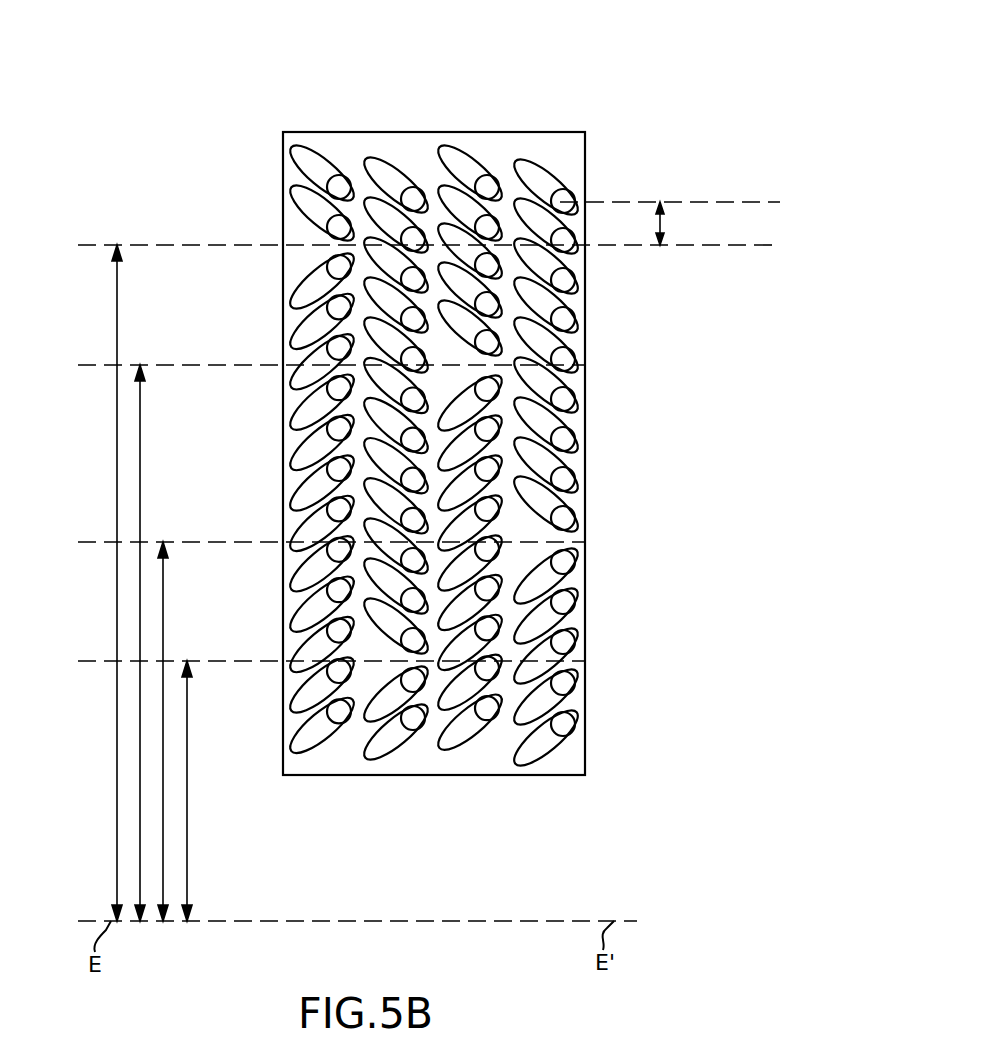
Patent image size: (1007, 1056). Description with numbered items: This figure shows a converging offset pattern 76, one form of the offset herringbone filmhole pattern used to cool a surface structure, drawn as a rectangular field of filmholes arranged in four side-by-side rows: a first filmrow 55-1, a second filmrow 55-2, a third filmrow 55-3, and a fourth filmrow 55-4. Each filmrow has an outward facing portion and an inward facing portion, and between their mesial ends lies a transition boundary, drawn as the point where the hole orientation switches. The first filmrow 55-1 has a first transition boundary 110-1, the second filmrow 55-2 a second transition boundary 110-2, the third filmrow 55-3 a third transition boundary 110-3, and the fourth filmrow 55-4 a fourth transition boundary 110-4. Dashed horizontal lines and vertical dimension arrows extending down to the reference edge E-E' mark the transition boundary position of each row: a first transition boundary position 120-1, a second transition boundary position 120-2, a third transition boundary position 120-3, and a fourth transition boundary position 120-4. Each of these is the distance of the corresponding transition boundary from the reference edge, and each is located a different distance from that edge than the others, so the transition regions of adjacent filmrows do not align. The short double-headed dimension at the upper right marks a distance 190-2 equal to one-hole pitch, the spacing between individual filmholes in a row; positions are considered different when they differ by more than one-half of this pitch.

The converging offset pattern 76 is at (497, 65).
The first filmrow 55-1 is at (279, 485).
The second filmrow 55-2 is at (326, 491).
The third filmrow 55-3 is at (537, 485).
The fourth filmrow 55-4 is at (599, 492).
The first transition boundary 110-1 is at (340, 246).
The second transition boundary 110-2 is at (415, 661).
The third transition boundary 110-3 is at (493, 364).
The fourth transition boundary 110-4 is at (568, 541).
The first transition boundary position 120-1 is at (100, 245).
The second transition boundary position 120-2 is at (98, 661).
The third transition boundary position 120-3 is at (95, 365).
The fourth transition boundary position 120-4 is at (98, 542).
The distance 190-2 is at (662, 222).